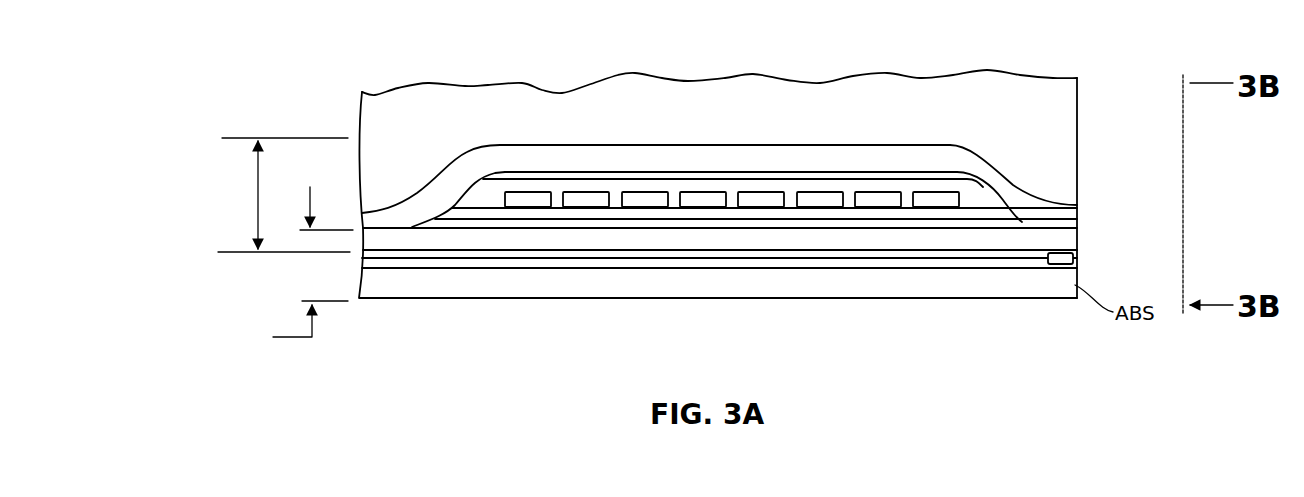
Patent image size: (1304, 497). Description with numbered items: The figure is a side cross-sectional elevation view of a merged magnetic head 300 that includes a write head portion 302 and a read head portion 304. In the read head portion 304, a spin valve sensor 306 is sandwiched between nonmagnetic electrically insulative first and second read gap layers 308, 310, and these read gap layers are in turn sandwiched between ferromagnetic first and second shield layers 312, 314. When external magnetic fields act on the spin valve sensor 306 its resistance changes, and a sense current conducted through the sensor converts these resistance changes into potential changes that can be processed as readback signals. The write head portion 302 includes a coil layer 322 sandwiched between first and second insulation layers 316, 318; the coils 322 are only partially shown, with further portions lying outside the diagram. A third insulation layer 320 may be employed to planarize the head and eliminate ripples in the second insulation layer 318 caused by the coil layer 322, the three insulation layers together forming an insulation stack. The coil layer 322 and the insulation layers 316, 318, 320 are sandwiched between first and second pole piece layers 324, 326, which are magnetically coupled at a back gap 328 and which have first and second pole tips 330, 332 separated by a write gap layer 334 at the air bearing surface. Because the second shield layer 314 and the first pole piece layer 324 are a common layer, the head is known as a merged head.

The merged magnetic head 300 is at (337, 107).
The write head portion 302 is at (247, 195).
The read head portion 304 is at (260, 344).
The spin valve sensor 306 is at (1072, 258).
The first read gap layer 308 is at (773, 270).
The second read gap layer 310 is at (740, 247).
The first shield layer 312 is at (842, 283).
The second shield layer 314 is at (947, 295).
The first pole piece layer 324 is at (933, 240).
The first insulation layer 316 is at (652, 215).
The second insulation layer 318 is at (968, 195).
The third insulation layer 320 is at (557, 170).
The coil layer 322 is at (758, 200).
The second pole piece layer 326 is at (855, 157).
The back gap 328 is at (392, 227).
The first pole tip 330 is at (1072, 240).
The second pole tip 332 is at (1072, 210).
The write gap layer 334 is at (1073, 222).